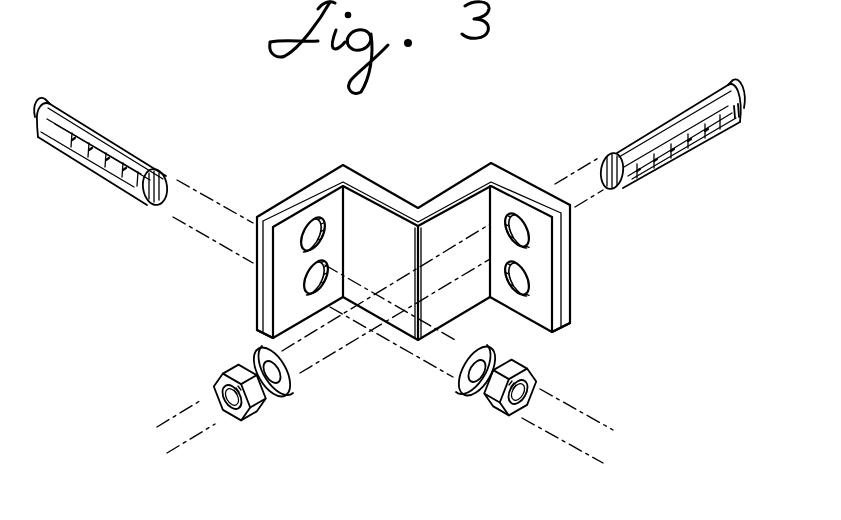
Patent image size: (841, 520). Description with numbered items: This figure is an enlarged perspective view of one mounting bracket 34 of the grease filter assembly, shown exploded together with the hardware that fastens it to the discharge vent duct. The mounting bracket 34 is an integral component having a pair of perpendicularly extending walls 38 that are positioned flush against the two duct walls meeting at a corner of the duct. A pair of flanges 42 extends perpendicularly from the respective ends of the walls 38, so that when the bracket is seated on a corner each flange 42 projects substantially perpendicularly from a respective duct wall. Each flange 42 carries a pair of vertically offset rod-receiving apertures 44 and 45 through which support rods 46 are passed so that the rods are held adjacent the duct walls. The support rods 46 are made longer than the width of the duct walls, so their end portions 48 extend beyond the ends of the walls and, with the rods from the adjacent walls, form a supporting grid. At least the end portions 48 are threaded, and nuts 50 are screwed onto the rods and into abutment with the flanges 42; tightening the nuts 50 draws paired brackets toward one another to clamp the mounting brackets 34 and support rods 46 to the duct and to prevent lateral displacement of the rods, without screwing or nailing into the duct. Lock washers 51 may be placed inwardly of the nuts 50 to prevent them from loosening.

The mounting bracket 34 is at (282, 206).
The perpendicularly extending walls 38 is at (377, 228).
The flanges 42 is at (272, 331).
The rod-receiving aperture 44 is at (320, 218).
The rod-receiving aperture 45 is at (300, 282).
The support rod 46 is at (70, 133).
The end portion 48 is at (100, 167).
The nut 50 is at (266, 412).
The lock washer 51 is at (287, 392).